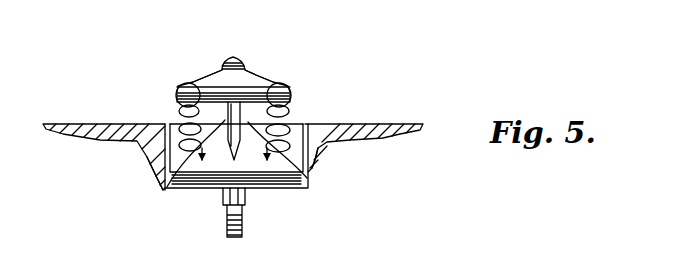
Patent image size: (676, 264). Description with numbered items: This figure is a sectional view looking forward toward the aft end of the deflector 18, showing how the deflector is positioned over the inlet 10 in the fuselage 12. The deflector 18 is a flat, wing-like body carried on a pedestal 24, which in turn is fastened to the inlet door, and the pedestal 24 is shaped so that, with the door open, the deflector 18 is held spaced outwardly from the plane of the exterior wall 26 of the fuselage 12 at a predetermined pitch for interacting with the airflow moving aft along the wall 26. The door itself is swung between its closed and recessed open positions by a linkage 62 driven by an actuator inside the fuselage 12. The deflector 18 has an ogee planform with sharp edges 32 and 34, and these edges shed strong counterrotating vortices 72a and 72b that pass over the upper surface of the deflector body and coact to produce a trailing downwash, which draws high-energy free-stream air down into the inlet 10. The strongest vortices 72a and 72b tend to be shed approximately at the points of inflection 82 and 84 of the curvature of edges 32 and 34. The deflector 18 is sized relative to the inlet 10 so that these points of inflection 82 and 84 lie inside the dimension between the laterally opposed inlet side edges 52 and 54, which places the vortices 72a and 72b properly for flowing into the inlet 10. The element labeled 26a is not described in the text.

The inlet 10 is at (300, 119).
The fuselage 12 is at (76, 116).
The deflector 18 is at (248, 60).
The pedestal 24 is at (253, 86).
The exterior wall 26 is at (392, 121).
The housing bottom 26a is at (192, 176).
The edge 32 is at (227, 80).
The edge 34 is at (251, 72).
The side 52 is at (171, 138).
The side 54 is at (327, 122).
The linkage 62 is at (244, 228).
The vortex 72a is at (157, 182).
The vortex 72b is at (318, 160).
The point of inflection 82 is at (184, 88).
The point of inflection 84 is at (283, 88).